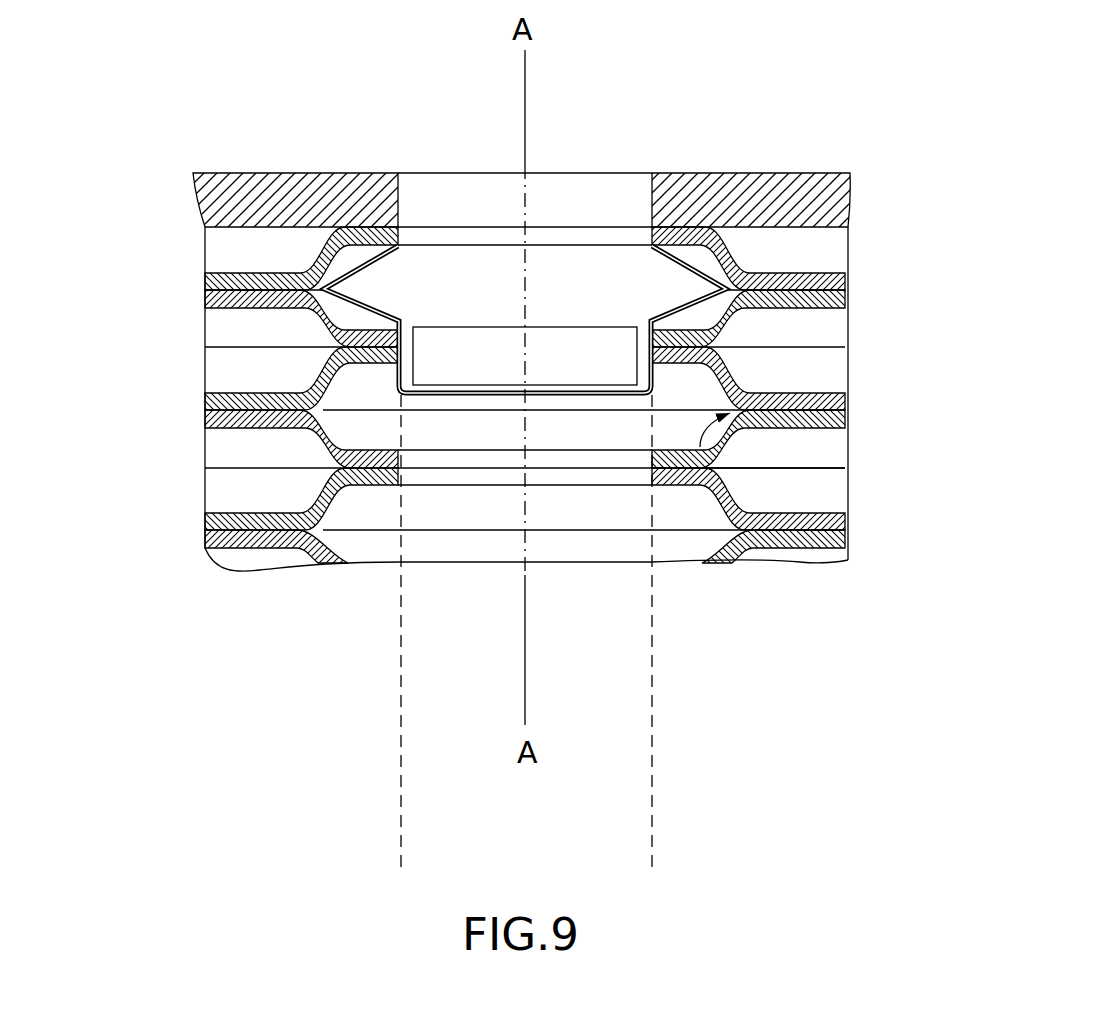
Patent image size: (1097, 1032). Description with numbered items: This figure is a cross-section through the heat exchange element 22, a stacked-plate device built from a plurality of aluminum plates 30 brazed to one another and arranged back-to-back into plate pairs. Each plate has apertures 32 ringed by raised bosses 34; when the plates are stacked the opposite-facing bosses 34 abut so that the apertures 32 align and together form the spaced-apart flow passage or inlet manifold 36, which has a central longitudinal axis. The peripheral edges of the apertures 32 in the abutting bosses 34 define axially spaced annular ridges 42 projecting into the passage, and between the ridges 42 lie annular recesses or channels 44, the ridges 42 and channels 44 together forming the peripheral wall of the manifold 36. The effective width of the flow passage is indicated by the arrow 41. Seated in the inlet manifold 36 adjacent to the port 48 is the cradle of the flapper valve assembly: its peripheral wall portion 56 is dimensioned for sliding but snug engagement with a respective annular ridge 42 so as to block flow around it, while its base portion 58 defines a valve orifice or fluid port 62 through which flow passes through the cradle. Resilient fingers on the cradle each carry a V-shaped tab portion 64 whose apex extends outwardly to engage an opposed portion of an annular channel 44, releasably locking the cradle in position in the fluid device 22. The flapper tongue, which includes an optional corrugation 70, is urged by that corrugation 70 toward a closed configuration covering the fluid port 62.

The heat exchange element 22 is at (778, 66).
The plates 30 is at (205, 278).
The apertures 32 is at (561, 466).
The raised bosses 34 is at (290, 250).
The inlet manifold 36 is at (622, 636).
The width of the flow passage 41 is at (648, 845).
The annular ridges 42 is at (768, 262).
The annular channels 44 is at (342, 424).
The port 48 is at (574, 210).
The peripheral wall portion 56 is at (735, 381).
The base portion 58 is at (600, 396).
The fluid port 62 is at (536, 402).
The V-shaped tab portion 64 is at (378, 290).
The corrugation 70 is at (508, 358).